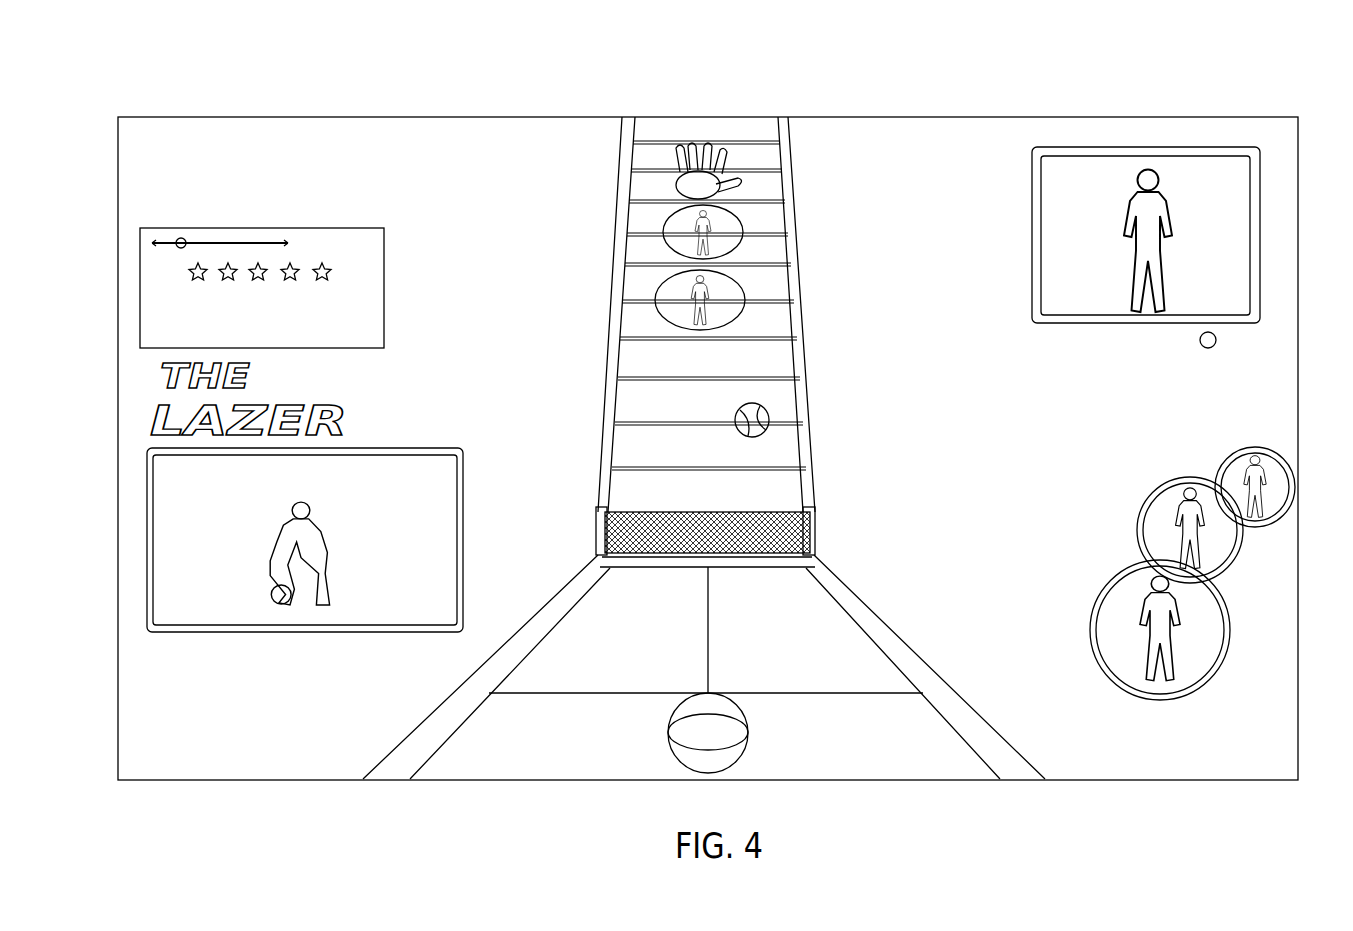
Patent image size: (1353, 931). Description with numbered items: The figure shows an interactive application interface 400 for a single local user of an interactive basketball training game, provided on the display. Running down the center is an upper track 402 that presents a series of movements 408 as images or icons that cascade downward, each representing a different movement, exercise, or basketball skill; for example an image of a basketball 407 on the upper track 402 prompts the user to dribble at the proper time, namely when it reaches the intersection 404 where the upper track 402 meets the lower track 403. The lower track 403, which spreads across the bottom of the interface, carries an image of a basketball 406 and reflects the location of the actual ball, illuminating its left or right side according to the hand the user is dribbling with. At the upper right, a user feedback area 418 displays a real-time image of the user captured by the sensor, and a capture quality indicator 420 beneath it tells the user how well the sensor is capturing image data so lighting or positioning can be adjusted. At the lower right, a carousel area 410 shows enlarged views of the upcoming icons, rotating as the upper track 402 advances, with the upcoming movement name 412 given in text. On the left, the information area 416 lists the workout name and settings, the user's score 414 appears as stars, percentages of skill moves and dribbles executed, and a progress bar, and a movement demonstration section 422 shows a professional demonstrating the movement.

The interactive application interface 400 is at (808, 92).
The upper track 402 is at (820, 282).
The lower track 403 is at (910, 620).
The intersection 404 is at (800, 535).
The image of a basketball 406 is at (735, 715).
The image of a basketball 407 is at (770, 418).
The series of movements 408 is at (742, 222).
The carousel area 410 is at (1110, 525).
The upcoming movement name 412 is at (1105, 720).
The user's score 414 is at (140, 277).
The information area 416 is at (190, 138).
The user feedback area 418 is at (1210, 165).
The capture quality indicator 420 is at (1265, 340).
The movement demonstration section 422 is at (165, 541).